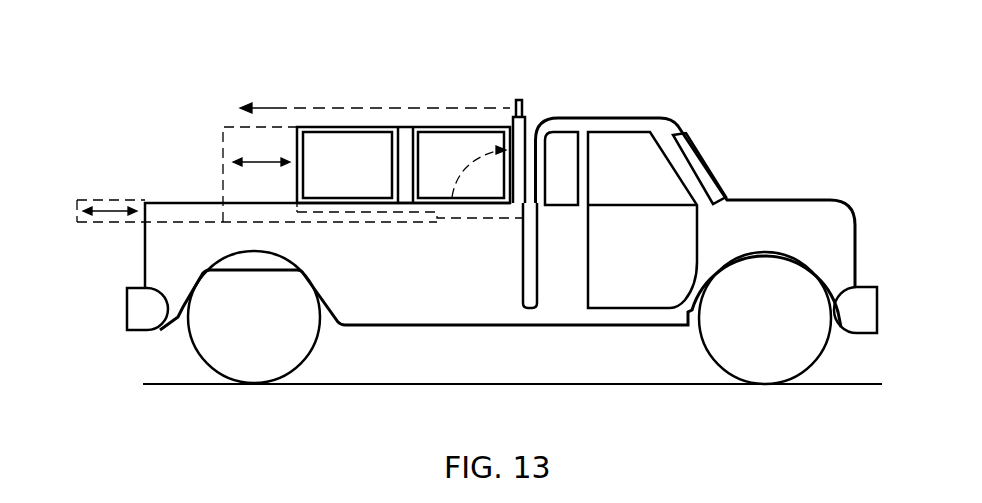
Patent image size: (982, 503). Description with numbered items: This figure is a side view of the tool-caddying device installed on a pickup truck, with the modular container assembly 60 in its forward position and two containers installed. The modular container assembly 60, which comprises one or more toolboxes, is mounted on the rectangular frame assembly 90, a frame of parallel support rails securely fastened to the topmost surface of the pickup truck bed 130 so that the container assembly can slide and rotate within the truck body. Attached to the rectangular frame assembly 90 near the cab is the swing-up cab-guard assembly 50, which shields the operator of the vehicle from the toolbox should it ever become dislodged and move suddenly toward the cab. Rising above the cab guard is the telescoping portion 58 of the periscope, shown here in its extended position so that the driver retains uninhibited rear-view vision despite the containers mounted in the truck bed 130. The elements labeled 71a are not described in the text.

The swing-up cab-guard assembly 50 is at (536, 117).
The telescoping portion 58 is at (522, 99).
The modular container assembly 60 is at (442, 126).
The slidable extension members 71a is at (113, 198).
The rectangular frame assembly 90 is at (377, 218).
The pickup truck bed 130 is at (158, 255).